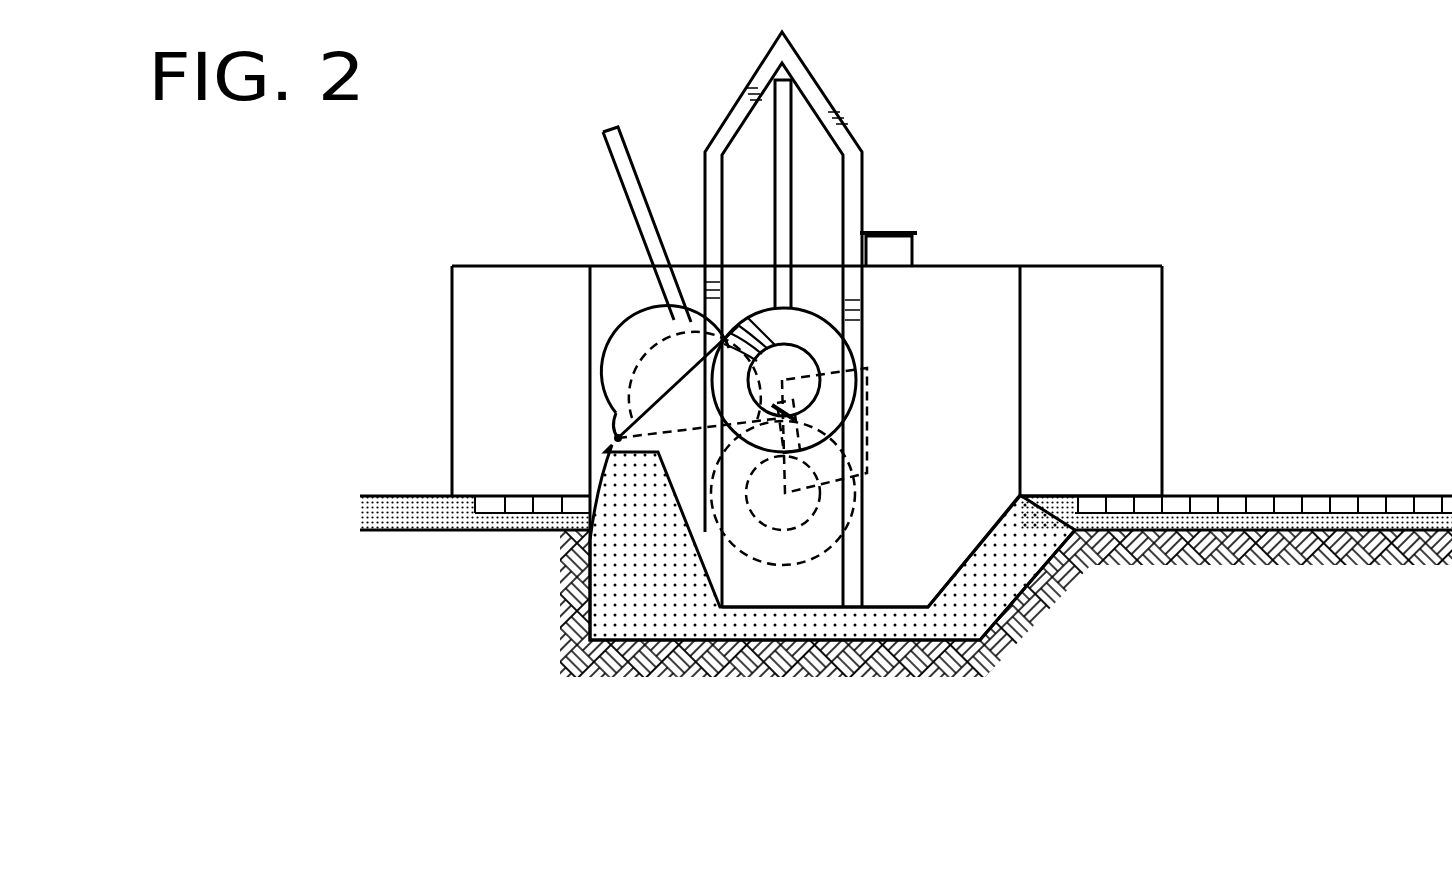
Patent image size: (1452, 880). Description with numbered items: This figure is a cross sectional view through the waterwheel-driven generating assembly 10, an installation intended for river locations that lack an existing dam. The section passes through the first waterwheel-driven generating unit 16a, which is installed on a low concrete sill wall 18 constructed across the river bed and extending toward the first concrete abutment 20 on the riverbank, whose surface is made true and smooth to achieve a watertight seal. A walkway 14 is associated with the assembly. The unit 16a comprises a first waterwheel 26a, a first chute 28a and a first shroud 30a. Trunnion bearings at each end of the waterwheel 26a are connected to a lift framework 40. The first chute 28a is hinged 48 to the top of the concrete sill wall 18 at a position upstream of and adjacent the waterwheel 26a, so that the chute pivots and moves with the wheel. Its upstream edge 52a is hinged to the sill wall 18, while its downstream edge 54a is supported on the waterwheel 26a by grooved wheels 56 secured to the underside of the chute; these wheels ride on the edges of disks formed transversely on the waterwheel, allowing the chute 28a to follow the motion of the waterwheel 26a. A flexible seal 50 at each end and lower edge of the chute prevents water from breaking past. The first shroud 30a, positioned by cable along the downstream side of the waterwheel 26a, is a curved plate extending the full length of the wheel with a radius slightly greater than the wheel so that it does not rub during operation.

The waterwheel-driven generating assembly 10 is at (1184, 263).
The walkway 14 is at (891, 229).
The first waterwheel-driven generating unit 16a is at (1026, 408).
The concrete sill wall 18 is at (557, 627).
The first concrete abutment 20 is at (1102, 263).
The first waterwheel 26a is at (840, 335).
The first chute 28a is at (625, 365).
The first shroud 30a is at (866, 378).
The lift framework 40 is at (824, 79).
The hinge 48 is at (617, 593).
The flexible seal 50 is at (614, 438).
The upstream edge of first chute 52a is at (612, 433).
The downstream edge of first chute 54a is at (720, 318).
The grooved wheels 56 is at (656, 346).